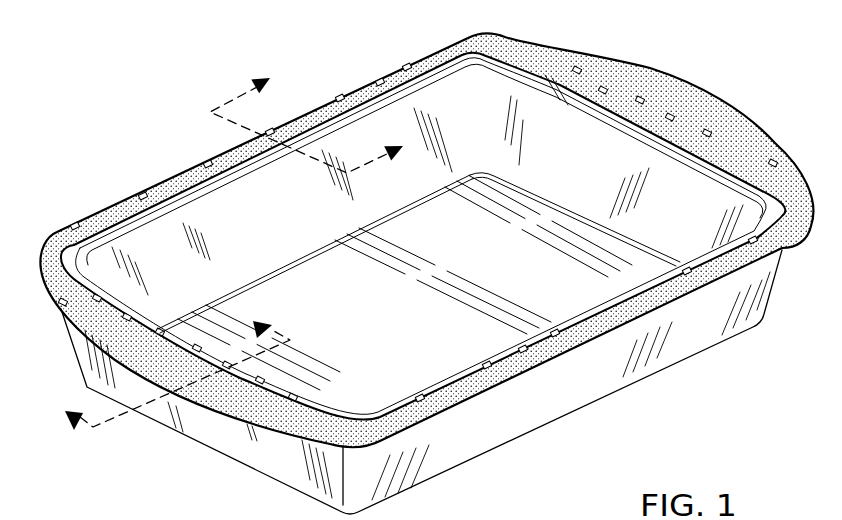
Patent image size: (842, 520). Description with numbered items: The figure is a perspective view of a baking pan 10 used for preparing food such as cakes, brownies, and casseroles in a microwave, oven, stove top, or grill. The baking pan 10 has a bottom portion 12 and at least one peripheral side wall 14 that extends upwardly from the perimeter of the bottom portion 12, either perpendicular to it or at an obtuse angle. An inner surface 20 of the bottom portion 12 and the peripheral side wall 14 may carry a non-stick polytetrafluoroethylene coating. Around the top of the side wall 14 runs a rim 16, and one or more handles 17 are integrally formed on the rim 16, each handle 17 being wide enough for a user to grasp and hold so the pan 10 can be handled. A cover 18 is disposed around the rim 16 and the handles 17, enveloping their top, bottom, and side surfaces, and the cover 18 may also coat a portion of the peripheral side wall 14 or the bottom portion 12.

The baking pan 10 is at (426, 262).
The bottom portion 12 is at (460, 247).
The peripheral side wall 14 is at (583, 144).
The rim 16 is at (527, 357).
The handle 17 is at (747, 118).
The cover 18 is at (603, 333).
The inner surface 20 is at (221, 314).